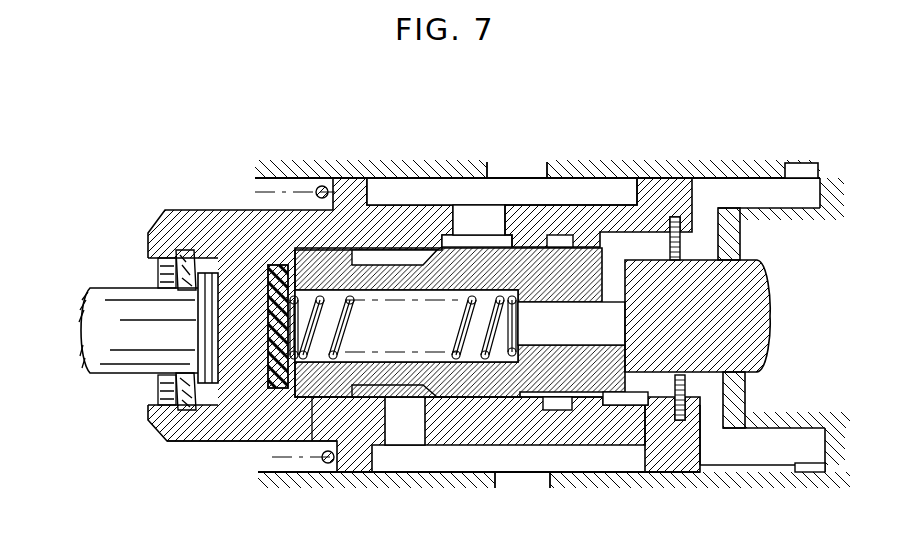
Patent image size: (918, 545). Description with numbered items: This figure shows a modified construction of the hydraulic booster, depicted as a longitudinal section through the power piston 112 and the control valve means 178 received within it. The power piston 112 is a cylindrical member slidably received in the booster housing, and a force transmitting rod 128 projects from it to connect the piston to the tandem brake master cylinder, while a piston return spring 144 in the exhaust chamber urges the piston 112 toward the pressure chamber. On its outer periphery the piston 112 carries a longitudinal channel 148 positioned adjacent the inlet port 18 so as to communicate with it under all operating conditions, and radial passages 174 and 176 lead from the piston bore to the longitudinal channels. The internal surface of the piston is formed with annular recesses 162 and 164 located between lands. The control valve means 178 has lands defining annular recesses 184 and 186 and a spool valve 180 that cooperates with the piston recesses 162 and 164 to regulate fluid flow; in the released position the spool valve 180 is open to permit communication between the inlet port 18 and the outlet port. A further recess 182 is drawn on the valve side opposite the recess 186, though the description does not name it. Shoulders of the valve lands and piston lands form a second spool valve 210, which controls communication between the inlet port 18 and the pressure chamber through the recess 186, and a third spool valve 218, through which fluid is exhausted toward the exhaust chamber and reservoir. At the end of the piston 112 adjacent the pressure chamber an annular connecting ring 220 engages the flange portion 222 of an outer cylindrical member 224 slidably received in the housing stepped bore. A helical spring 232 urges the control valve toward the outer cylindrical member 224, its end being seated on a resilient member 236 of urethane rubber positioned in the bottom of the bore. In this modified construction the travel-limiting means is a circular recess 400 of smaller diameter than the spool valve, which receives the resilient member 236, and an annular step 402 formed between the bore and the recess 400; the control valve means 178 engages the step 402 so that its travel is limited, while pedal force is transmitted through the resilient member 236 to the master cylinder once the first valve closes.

The inlet port 18 is at (518, 176).
The power piston 112 is at (157, 212).
The force transmitting rod 128 is at (108, 303).
The piston return spring 144 is at (327, 180).
The longitudinal channel 148 is at (560, 200).
The annular recess 162 is at (467, 238).
The annular recess 164 is at (560, 238).
The radial passage 174 is at (472, 213).
The radial passage 176 is at (440, 412).
The control valve means 178 is at (313, 258).
The spool valve 180 is at (418, 400).
The recess 182 is at (512, 372).
The annular recess 184 is at (378, 258).
The annular recess 186 is at (548, 245).
The second spool valve 210 is at (520, 402).
The third spool valve 218 is at (549, 398).
The annular connecting ring 220 is at (683, 240).
The flange portion 222 is at (705, 262).
The outer cylindrical member 224 is at (803, 162).
The helical spring 232 is at (340, 326).
The resilient member 236 is at (270, 325).
The circular recess 400 is at (250, 442).
The annular step 402 is at (302, 400).